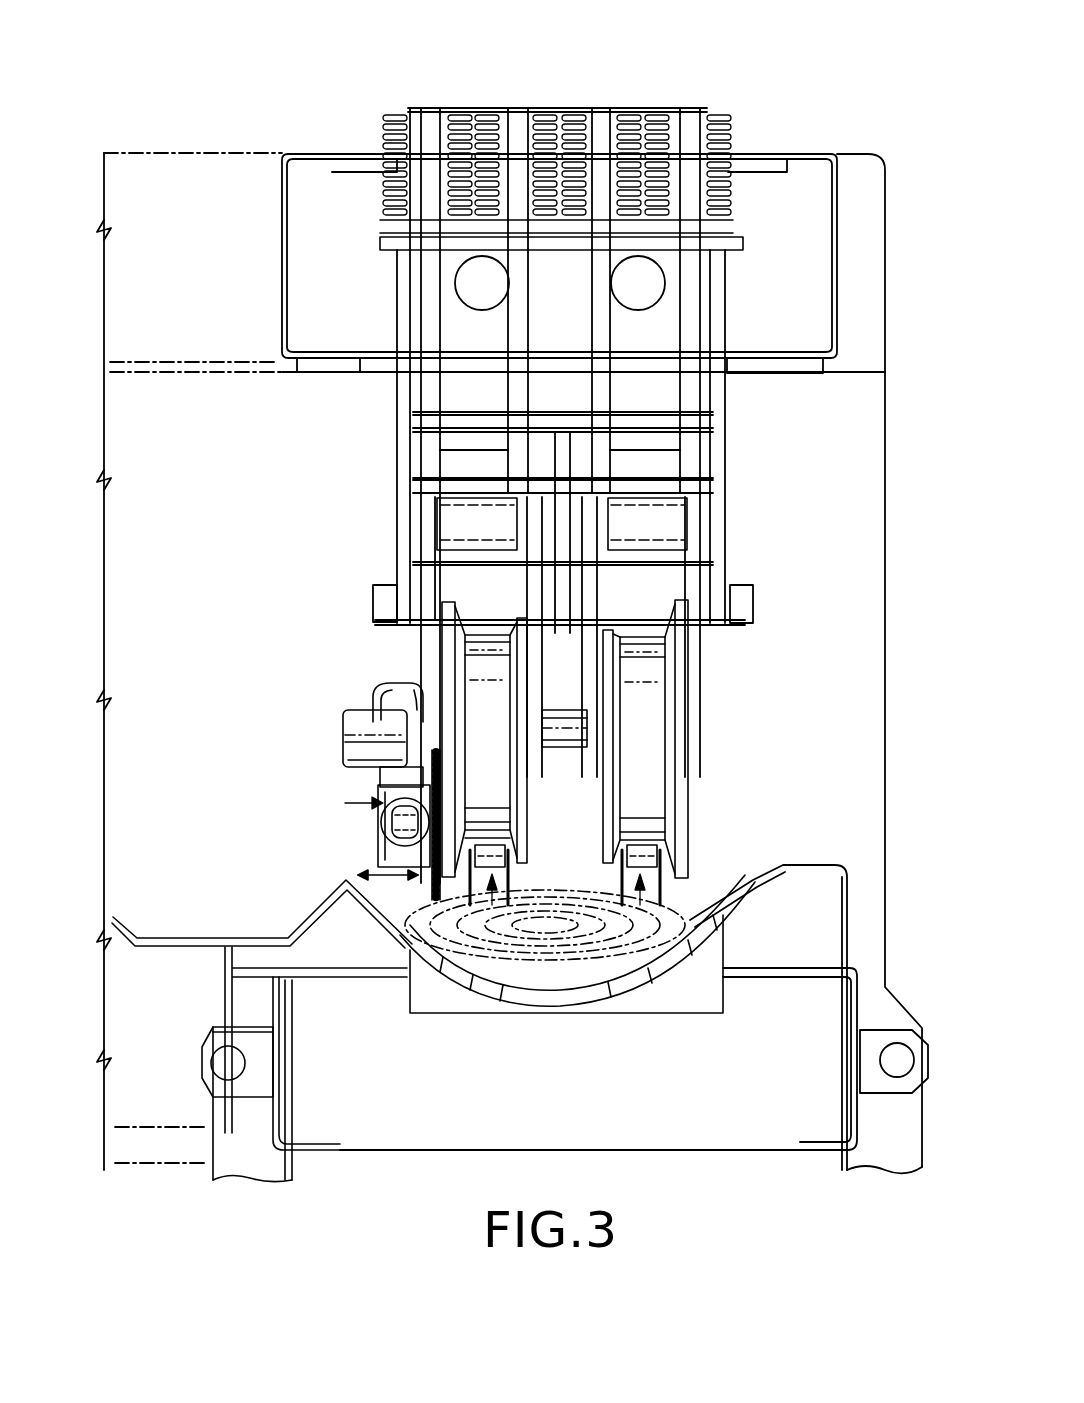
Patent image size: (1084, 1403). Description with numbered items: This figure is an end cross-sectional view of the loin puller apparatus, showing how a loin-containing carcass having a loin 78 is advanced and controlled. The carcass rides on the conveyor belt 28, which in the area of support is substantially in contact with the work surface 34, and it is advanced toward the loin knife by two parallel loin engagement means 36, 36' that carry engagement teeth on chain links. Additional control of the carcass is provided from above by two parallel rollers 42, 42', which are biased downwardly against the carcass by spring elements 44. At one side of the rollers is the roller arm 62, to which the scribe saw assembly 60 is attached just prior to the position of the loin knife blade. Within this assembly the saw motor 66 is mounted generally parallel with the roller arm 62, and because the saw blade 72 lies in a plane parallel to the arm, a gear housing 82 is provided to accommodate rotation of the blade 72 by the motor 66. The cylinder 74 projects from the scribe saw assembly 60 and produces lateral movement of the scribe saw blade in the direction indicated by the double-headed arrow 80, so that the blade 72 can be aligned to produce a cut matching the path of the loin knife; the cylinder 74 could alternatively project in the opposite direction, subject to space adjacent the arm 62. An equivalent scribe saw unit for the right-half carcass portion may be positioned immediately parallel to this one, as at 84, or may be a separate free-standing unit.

The conveyor belt 28 is at (690, 910).
The work surface 34 is at (295, 928).
The loin engagement means 36 is at (473, 951).
The loin engagement means 36' is at (657, 946).
The roller 42 is at (482, 687).
The roller 42' is at (644, 688).
The spring elements 44 is at (735, 125).
The scribe saw assembly 60 is at (345, 803).
The roller arm 62 is at (425, 630).
The saw motor 66 is at (375, 700).
The saw blade 72 is at (435, 897).
The cylinder 74 is at (343, 738).
The loin 78 is at (622, 1008).
The double-headed arrow 80 is at (388, 862).
The gear housing 82 is at (385, 828).
The parallel unit position 84 is at (117, 930).